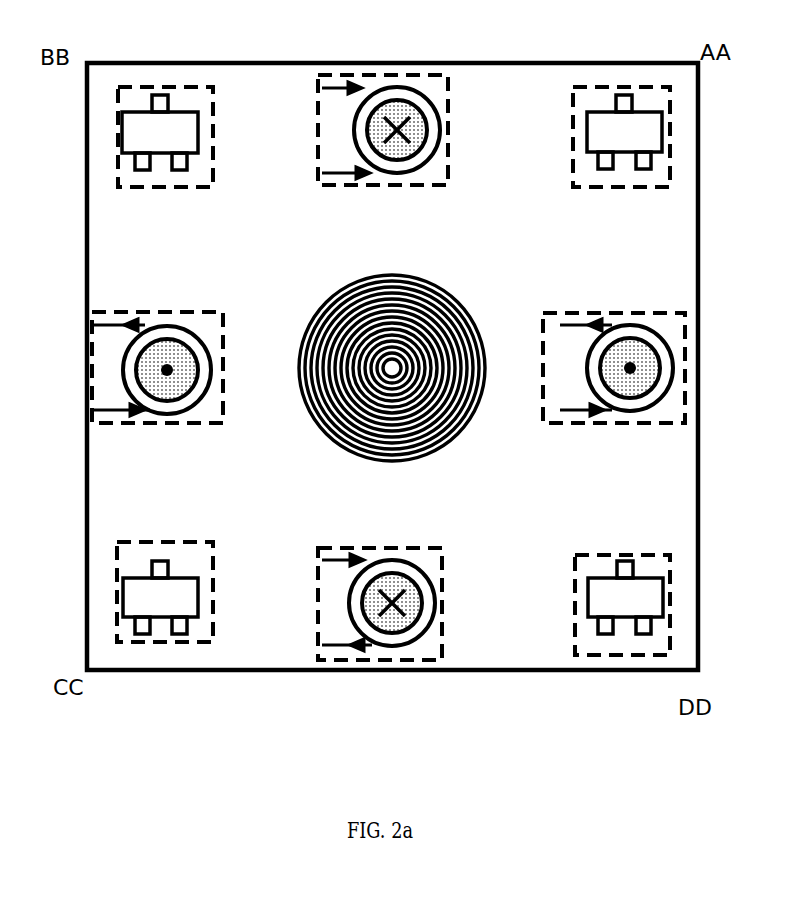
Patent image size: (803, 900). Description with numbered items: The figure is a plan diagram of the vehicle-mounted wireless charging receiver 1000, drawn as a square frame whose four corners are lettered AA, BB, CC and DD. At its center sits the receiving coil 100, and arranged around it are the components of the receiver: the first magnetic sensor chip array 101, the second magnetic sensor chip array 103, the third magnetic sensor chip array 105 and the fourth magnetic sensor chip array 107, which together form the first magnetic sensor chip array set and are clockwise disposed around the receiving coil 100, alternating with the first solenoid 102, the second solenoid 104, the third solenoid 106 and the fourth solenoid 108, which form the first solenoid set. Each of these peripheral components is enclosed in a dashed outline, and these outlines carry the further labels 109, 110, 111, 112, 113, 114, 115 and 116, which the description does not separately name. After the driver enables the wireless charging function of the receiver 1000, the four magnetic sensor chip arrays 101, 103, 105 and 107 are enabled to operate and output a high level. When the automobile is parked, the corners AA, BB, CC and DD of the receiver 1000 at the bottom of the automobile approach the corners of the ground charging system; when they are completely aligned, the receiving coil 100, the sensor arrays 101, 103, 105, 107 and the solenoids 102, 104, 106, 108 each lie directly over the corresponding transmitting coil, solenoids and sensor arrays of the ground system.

The receiving coil 100 is at (335, 445).
The first magnetic sensor chip array 101 is at (580, 148).
The first solenoid 102 is at (615, 420).
The second magnetic sensor chip array 103 is at (580, 587).
The second solenoid 104 is at (332, 585).
The third magnetic sensor chip array 105 is at (152, 553).
The third solenoid 106 is at (158, 422).
The fourth magnetic sensor chip array 107 is at (160, 173).
The fourth solenoid 108 is at (358, 178).
The sensor position 109 is at (193, 87).
The sensor position 110 is at (415, 78).
The sensor position 111 is at (600, 87).
The sensor position 112 is at (593, 312).
The sensor position 113 is at (600, 557).
The sensor position 114 is at (433, 547).
The magnetic field sensor (S) 115 is at (210, 623).
The sensor position 116 is at (170, 312).
The wireless charging receiver 1000 is at (127, 682).